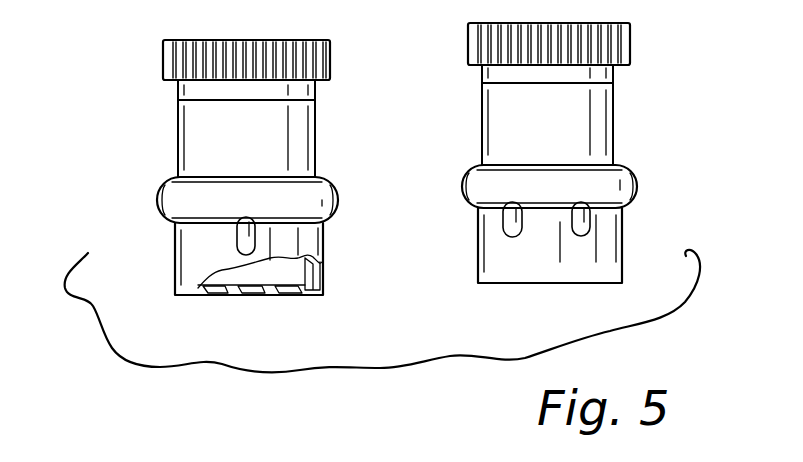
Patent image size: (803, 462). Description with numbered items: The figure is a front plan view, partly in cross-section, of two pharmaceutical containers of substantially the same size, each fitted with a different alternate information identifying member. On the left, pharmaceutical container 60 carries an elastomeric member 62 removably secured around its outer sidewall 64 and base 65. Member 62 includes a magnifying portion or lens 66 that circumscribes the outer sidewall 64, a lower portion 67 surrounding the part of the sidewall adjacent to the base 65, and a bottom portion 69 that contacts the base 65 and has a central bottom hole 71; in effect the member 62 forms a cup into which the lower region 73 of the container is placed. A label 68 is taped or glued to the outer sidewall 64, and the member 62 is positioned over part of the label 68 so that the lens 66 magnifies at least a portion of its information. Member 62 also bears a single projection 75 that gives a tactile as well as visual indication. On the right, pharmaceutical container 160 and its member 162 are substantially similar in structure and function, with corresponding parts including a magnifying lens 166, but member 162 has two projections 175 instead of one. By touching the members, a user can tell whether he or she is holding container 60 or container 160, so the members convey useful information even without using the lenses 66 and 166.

The pharmaceutical container 60 is at (145, 91).
The elastomeric member 62 is at (144, 203).
The outer sidewall 64 is at (316, 90).
The base 65 is at (218, 297).
The magnifying portion or lens 66 is at (325, 211).
The lower portion 67 is at (325, 273).
The label 68 is at (200, 102).
The bottom portion 69 is at (300, 298).
The central bottom hole 71 is at (257, 297).
The lower region 73 is at (343, 289).
The projection 75 is at (237, 240).
The pharmaceutical container 160 is at (632, 134).
The elastomeric member 162 is at (466, 176).
The magnifying lens 166 is at (625, 188).
The projections 175 is at (579, 236).